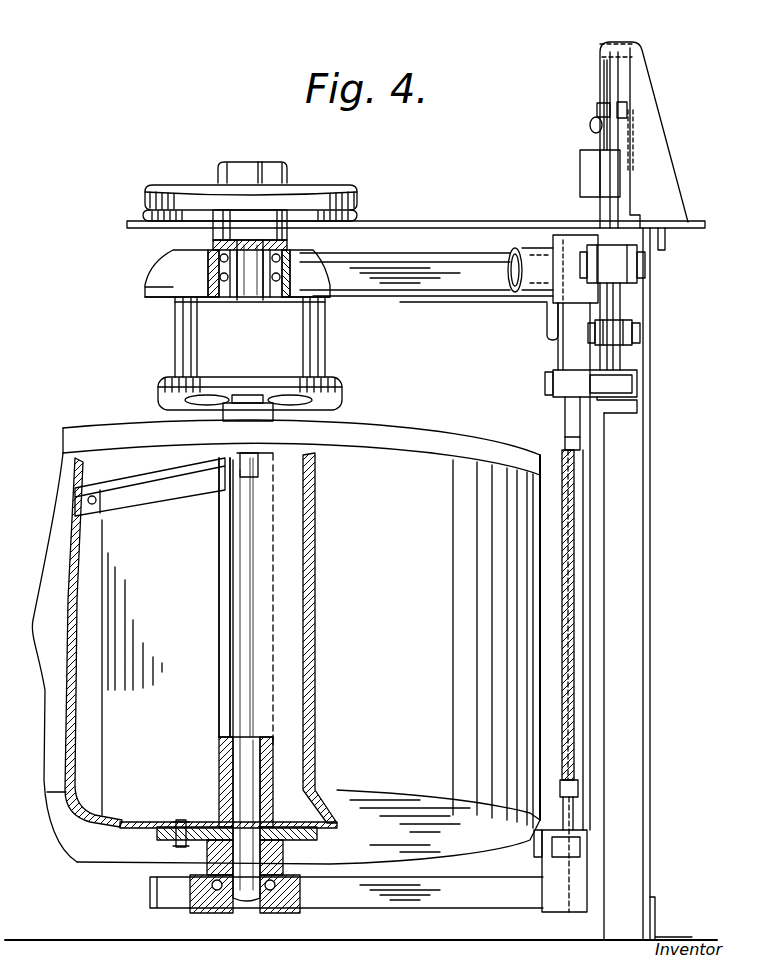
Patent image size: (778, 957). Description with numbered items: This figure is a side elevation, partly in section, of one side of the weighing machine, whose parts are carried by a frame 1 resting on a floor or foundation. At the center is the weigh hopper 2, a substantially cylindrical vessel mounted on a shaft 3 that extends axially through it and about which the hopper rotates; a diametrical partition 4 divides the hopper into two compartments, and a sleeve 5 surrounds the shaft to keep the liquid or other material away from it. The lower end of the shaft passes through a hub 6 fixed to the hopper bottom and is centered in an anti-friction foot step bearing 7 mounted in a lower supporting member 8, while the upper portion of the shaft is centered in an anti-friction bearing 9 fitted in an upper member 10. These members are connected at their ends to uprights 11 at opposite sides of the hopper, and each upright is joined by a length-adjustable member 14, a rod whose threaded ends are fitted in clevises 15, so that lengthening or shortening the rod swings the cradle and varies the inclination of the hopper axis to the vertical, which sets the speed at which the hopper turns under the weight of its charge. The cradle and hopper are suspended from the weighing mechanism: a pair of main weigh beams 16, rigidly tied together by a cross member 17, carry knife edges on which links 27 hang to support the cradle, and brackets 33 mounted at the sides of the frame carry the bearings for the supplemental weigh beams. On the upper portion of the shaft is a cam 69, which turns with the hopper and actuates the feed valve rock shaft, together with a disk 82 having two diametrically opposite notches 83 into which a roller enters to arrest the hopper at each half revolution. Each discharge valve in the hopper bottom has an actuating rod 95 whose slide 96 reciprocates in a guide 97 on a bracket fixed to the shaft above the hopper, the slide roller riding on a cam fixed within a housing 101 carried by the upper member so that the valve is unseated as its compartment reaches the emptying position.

The frame 1 is at (640, 623).
The weigh hopper 2 is at (286, 642).
The shaft 3 is at (242, 282).
The partition 4 is at (201, 640).
The sleeve 5 is at (273, 785).
The hub 6 is at (157, 833).
The foot step bearing 7 is at (207, 907).
The lower supporting member 8 is at (375, 897).
The bearing 9 is at (300, 273).
The upper member 10 is at (387, 282).
The uprights 11 is at (582, 592).
The adjustable member 14 is at (573, 545).
The clevises 15 is at (577, 427).
The main weigh beams 16 is at (623, 273).
The cross member 17 is at (530, 283).
The links 27 is at (643, 320).
The brackets 33 is at (627, 403).
The cam 69 is at (227, 168).
The disk 82 is at (300, 190).
The notch 83 is at (150, 212).
The valve actuating rod 95 is at (223, 477).
The slide 96 is at (243, 365).
The guide 97 is at (230, 413).
The housing 101 is at (315, 348).